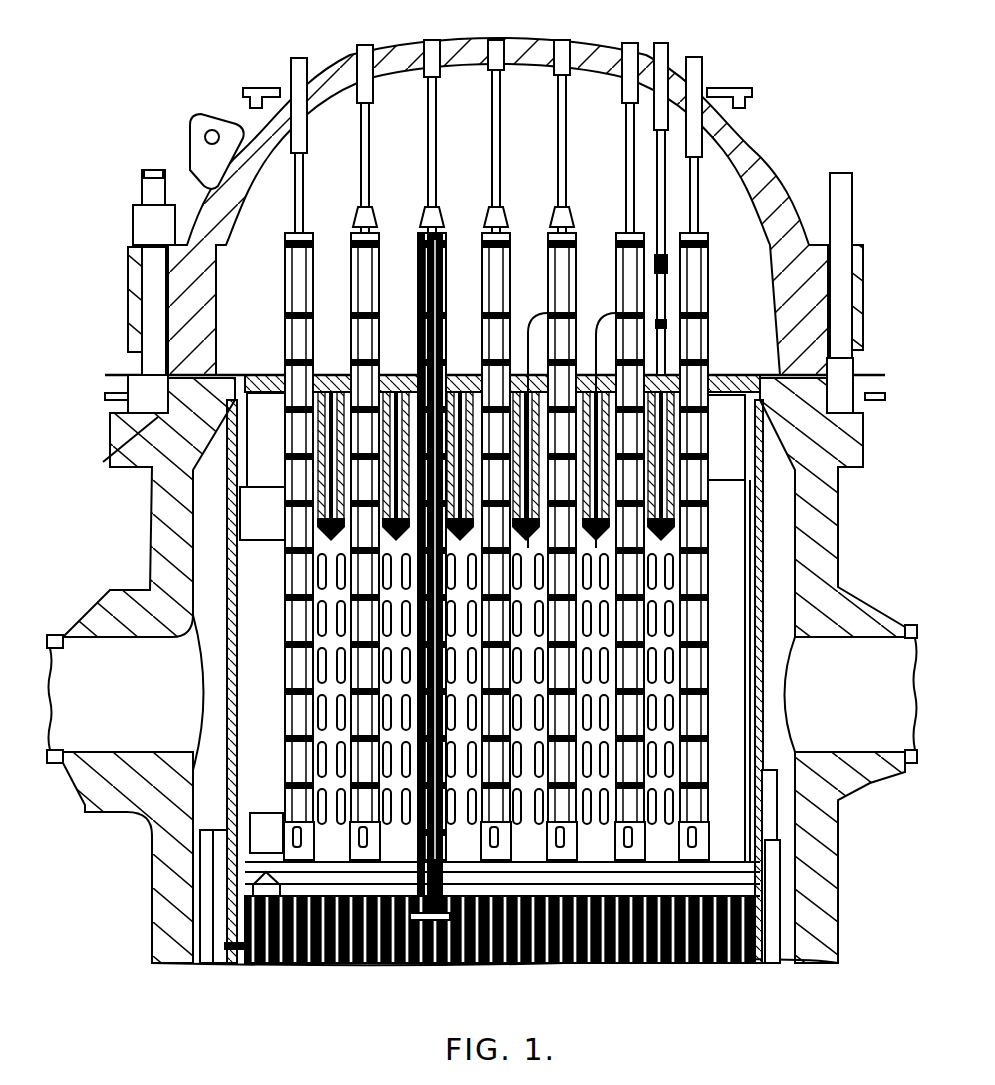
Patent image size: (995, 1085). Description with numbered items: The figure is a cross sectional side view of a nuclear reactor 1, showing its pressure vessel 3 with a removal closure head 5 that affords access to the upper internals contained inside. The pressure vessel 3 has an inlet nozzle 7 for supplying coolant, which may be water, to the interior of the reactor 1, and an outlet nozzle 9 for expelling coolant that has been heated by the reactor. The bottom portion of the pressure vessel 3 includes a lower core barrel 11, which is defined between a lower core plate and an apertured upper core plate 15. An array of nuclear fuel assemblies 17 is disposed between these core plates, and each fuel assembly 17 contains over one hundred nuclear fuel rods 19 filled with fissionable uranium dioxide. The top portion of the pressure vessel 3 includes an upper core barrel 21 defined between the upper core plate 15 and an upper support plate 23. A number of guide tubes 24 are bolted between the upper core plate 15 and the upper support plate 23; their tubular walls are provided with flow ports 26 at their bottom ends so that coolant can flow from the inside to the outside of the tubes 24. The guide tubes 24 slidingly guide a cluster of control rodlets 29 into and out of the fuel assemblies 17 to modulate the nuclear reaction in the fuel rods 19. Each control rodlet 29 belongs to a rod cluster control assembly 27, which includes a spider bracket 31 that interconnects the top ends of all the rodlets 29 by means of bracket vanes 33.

The nuclear reactor 1 is at (176, 128).
The pressure vessel 3 is at (820, 532).
The removal closure head 5 is at (744, 160).
The inlet nozzle 7 is at (132, 713).
The outlet nozzle 9 is at (842, 713).
The lower core barrel 11 is at (228, 988).
The upper core plate 15 is at (742, 852).
The nuclear fuel assemblies 17 is at (582, 965).
The nuclear fuel rods 19 is at (452, 963).
The upper core barrel 21 is at (276, 651).
The upper support plate 23 is at (258, 375).
The guide tubes 24 is at (627, 607).
The flow ports 26 is at (694, 836).
The rod cluster control assembly 27 is at (427, 207).
The control rodlets 29 is at (430, 326).
The spider bracket 31 is at (438, 293).
The bracket vanes 33 is at (438, 320).